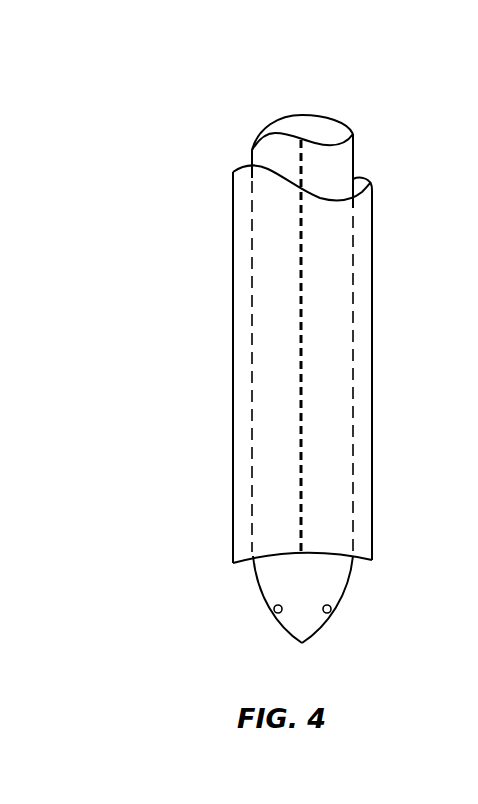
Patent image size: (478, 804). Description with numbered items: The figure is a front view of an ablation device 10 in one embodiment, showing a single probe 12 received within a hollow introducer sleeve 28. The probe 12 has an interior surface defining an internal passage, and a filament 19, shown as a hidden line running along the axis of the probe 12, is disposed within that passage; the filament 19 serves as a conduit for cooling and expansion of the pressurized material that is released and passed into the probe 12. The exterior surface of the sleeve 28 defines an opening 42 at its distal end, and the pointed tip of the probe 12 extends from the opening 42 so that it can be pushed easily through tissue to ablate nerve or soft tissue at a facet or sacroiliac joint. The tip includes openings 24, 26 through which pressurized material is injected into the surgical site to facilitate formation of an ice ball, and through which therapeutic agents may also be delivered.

The ablation device 10 is at (133, 138).
The probe 12 is at (367, 141).
The filament 19 is at (301, 443).
The opening 24 is at (274, 612).
The opening 26 is at (331, 613).
The sleeve 28 is at (207, 327).
The opening 42 is at (249, 565).